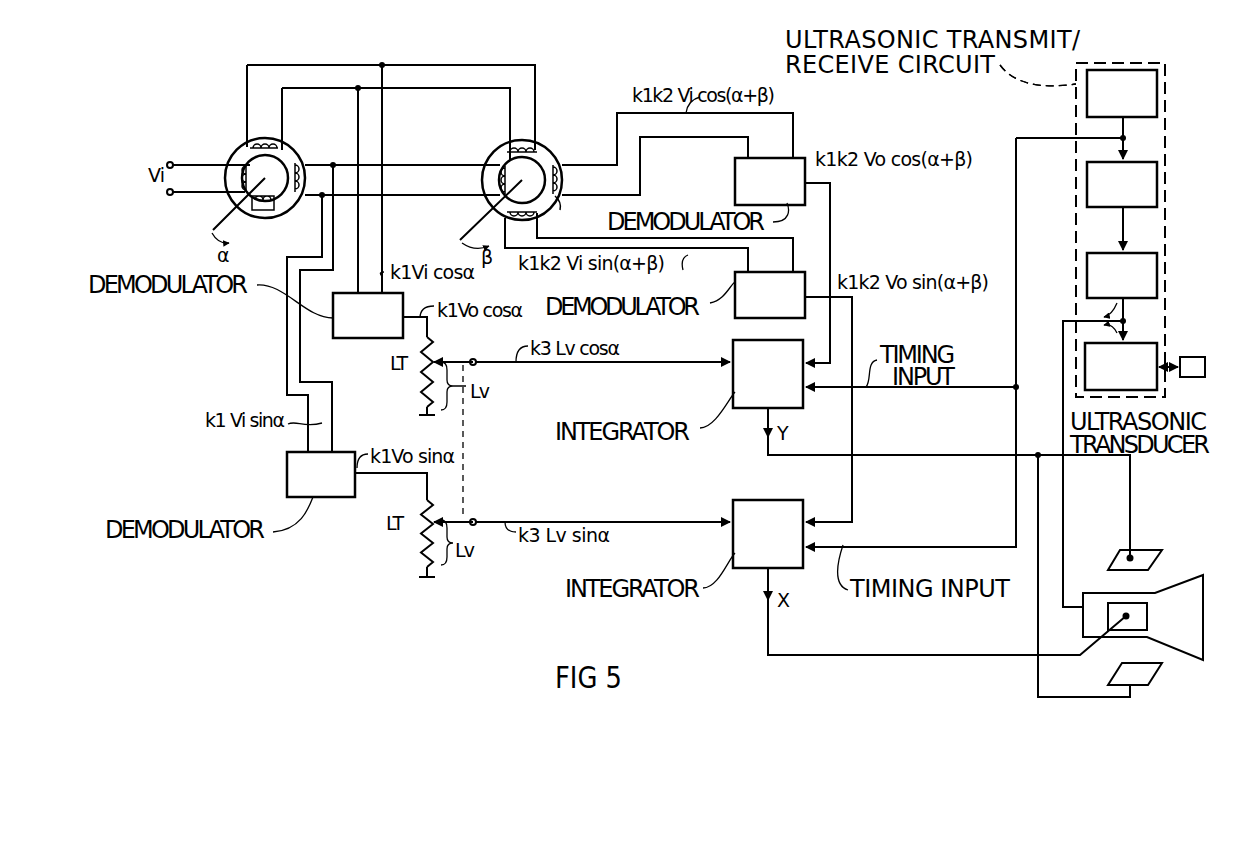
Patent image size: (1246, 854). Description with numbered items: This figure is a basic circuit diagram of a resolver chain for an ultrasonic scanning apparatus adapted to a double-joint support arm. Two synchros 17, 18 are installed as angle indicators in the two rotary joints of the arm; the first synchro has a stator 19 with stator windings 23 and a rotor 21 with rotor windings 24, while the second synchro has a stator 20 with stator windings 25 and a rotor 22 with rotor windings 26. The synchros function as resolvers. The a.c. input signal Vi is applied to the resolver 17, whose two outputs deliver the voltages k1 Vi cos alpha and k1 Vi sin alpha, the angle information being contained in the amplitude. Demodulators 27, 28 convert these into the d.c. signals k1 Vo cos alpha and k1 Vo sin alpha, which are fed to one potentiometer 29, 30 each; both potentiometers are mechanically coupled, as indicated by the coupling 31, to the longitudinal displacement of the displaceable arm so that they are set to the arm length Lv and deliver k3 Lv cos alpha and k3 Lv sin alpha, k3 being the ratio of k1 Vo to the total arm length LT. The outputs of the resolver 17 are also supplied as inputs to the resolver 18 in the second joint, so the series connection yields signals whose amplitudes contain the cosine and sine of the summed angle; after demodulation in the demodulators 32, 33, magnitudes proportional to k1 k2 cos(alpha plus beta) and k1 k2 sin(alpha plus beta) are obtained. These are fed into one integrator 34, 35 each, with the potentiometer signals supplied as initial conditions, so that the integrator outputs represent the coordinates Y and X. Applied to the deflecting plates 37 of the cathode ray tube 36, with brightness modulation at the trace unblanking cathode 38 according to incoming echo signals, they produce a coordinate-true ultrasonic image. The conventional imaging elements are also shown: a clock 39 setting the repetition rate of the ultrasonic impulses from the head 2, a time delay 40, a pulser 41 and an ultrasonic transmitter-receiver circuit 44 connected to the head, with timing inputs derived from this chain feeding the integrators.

The ultrasonic head 2 is at (1188, 378).
The synchro 17 is at (326, 151).
The synchro 18 is at (591, 154).
The stator 19 is at (256, 142).
The stator 20 is at (547, 150).
The rotor 21 is at (256, 162).
The rotor 22 is at (560, 204).
The stator windings 23 is at (283, 142).
The rotor windings 24 is at (242, 179).
The stator windings 25 is at (560, 176).
The rotor windings 26 is at (503, 166).
The demodulator 27 is at (368, 315).
The demodulator 28 is at (321, 474).
The potentiometer 29 is at (418, 386).
The potentiometer 30 is at (418, 548).
The mechanical coupling 31 is at (463, 440).
The demodulator 32 is at (770, 181).
The demodulator 33 is at (770, 295).
The integrator 34 is at (768, 374).
The integrator 35 is at (768, 534).
The cathode ray tube 36 is at (1193, 602).
The deflecting plates 37 is at (1143, 550).
The trace unblanking cathode 38 is at (1088, 625).
The clock 39 is at (1122, 93).
The time delay 40 is at (1122, 184).
The pulser 41 is at (1122, 275).
The ultrasonic transmitter-receiver circuit 44 is at (1121, 366).